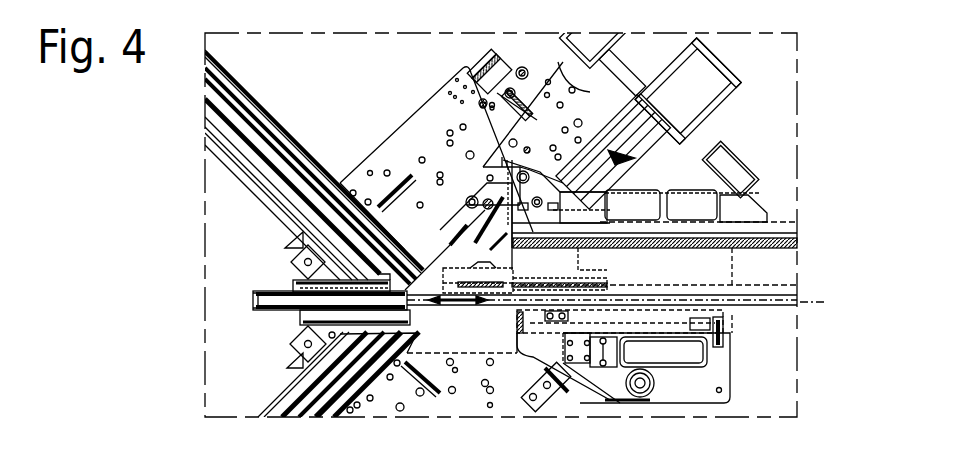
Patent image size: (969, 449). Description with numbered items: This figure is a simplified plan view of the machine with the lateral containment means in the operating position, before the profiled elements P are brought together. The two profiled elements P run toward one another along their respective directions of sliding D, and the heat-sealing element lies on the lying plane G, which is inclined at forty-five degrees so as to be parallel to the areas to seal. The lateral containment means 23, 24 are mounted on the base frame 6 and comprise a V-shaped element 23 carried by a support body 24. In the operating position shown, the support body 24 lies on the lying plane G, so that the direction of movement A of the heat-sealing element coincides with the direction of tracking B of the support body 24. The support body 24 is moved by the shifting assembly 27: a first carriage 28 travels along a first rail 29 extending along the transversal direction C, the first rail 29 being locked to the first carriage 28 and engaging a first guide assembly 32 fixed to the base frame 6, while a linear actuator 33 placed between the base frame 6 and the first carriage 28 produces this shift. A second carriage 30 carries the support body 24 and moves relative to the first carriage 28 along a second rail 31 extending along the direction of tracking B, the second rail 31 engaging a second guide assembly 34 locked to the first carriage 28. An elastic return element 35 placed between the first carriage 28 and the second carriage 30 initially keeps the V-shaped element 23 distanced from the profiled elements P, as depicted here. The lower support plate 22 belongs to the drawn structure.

The base frame 6 is at (718, 373).
The lower support plate 22 is at (507, 390).
The V-shaped element 23 is at (383, 282).
The support body 24 is at (476, 366).
The shifting assembly 27 is at (675, 146).
The first carriage 28 is at (373, 213).
The first rail 29 is at (465, 203).
The second carriage 30 is at (565, 405).
The second rail 31 is at (515, 160).
The first guide assembly 32 is at (577, 48).
The linear actuator 33 is at (640, 72).
The second guide assembly 34 is at (522, 205).
The elastic return element 35 is at (628, 285).
The direction of movement A is at (730, 337).
The direction of tracking B is at (395, 310).
The transversal direction C is at (462, 198).
The direction of sliding D is at (384, 200).
The lying plane G is at (812, 302).
The profiled element P is at (228, 195).